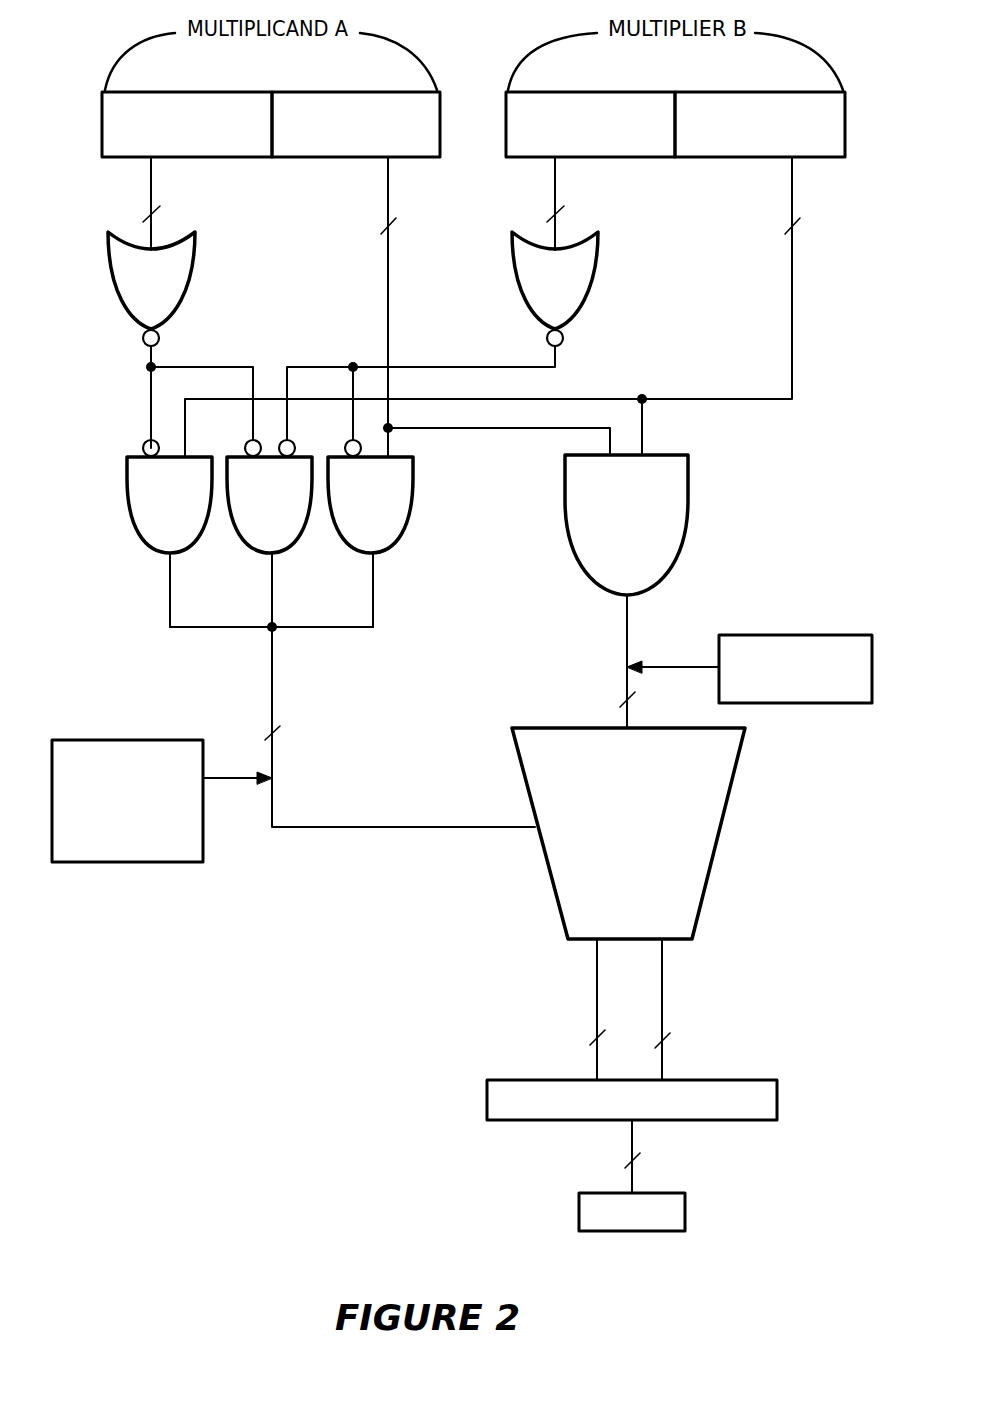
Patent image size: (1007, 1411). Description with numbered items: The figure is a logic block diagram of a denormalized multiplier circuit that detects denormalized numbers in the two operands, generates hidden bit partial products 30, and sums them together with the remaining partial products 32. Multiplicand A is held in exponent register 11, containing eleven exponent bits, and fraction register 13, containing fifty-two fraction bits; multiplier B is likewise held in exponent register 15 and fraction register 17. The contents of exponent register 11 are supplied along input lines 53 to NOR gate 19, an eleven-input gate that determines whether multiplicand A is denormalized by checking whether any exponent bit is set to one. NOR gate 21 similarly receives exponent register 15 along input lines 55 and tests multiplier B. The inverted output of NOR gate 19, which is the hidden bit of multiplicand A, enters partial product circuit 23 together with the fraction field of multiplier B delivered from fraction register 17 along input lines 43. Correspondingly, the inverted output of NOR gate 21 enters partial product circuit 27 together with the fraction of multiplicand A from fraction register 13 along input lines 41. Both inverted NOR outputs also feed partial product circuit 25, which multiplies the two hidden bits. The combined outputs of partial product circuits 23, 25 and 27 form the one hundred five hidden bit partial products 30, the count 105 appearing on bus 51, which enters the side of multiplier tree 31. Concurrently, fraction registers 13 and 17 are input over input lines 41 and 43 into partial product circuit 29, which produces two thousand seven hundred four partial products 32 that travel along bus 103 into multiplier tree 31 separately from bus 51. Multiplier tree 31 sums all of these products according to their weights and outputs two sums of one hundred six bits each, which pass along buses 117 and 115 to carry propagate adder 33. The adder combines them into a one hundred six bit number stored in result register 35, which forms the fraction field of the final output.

The exponent register 11 is at (216, 92).
The fraction register 13 is at (328, 92).
The exponent register 15 is at (618, 92).
The fraction register 17 is at (731, 92).
The NOR gate 19 is at (186, 289).
The NOR gate 21 is at (592, 290).
The partial product circuit 23 is at (131, 520).
The partial product circuit 25 is at (251, 545).
The partial product circuit 27 is at (346, 540).
The partial product circuit 29 is at (568, 508).
The hidden bit partial products 30 is at (140, 862).
The multiplier tree 31 is at (725, 815).
The partial products 32 is at (815, 703).
The carry propagate adder 33 is at (778, 1096).
The result register 35 is at (686, 1208).
The input lines 41 is at (389, 172).
The input lines 43 is at (793, 172).
The bus 51 is at (273, 680).
The input lines 53 is at (152, 170).
The input lines 55 is at (556, 170).
The bus 103 is at (628, 630).
The hidden bit partial products count 105 is at (400, 763).
The bus 115 is at (663, 957).
The bus 117 is at (596, 958).